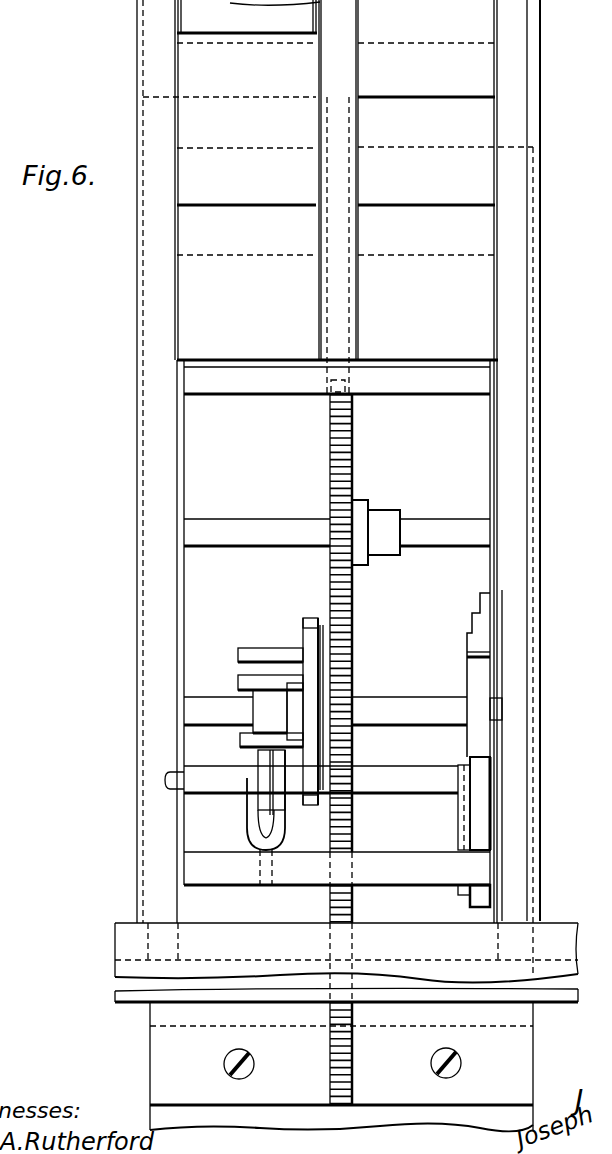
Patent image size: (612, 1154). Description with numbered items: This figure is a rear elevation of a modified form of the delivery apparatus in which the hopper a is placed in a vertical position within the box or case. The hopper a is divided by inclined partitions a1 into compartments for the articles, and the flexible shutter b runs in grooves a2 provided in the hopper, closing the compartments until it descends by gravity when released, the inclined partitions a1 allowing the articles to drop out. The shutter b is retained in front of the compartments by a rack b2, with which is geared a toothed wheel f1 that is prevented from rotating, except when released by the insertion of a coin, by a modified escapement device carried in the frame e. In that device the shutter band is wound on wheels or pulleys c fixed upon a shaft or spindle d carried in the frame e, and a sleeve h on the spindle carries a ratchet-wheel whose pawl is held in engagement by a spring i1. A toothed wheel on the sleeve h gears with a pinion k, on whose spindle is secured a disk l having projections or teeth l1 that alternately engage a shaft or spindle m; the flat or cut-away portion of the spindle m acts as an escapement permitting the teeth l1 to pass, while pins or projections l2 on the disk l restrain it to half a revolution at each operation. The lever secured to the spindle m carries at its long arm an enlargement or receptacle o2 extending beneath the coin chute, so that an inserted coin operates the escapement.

The hopper a is at (178, 122).
The partitions a1 is at (412, 97).
The grooves a2 is at (257, 206).
The shutter b is at (341, 565).
The rack b2 is at (352, 1040).
The shaft or spindle d is at (337, 532).
The frame e is at (184, 472).
The toothed wheel f1 is at (352, 447).
The sleeve h is at (278, 711).
The spring i1 is at (352, 690).
The pinion k is at (352, 750).
The disk l is at (305, 650).
The projections or teeth l1 is at (303, 628).
The pins or projections l2 is at (238, 655).
The shaft or spindle m is at (327, 832).
The wheels or pulleys c is at (247, 782).
The enlargement or receptacle o2 is at (258, 835).